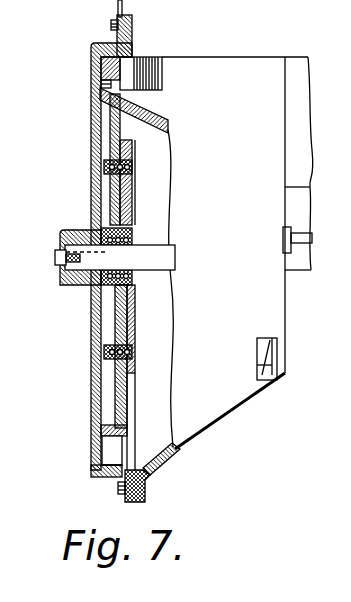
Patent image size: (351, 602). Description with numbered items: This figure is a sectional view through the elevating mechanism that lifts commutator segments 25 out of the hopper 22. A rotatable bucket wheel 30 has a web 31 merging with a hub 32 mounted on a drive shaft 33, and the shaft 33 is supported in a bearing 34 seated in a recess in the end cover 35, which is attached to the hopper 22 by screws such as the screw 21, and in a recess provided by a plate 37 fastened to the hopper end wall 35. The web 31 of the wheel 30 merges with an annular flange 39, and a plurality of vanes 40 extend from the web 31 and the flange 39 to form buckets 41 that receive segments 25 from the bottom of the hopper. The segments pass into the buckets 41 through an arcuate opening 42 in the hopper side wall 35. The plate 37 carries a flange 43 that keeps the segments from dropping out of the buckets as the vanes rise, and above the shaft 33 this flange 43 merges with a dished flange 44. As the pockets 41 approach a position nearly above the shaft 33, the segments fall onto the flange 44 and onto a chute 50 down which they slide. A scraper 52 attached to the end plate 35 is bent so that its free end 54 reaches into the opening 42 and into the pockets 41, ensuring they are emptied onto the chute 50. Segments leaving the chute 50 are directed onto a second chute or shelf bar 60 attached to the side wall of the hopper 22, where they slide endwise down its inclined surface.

The screw 21 is at (117, 492).
The hopper 22 is at (180, 449).
The segments 25 is at (162, 122).
The bucket wheel 30 is at (93, 124).
The web 31 is at (96, 157).
The hub 32 is at (80, 284).
The drive shaft 33 is at (60, 262).
The bearing 34 is at (122, 241).
The end cover 35 is at (133, 192).
The plate 37 is at (115, 315).
The annular flange 39 is at (110, 477).
The vanes 40 is at (109, 451).
The buckets 41 is at (117, 458).
The arcuate opening 42 is at (128, 409).
The flange 43 is at (108, 430).
The dished flange 44 is at (103, 97).
The chute 50 is at (145, 107).
The scraper 52 is at (200, 76).
The free end 54 is at (101, 81).
The second chute 60 is at (265, 371).